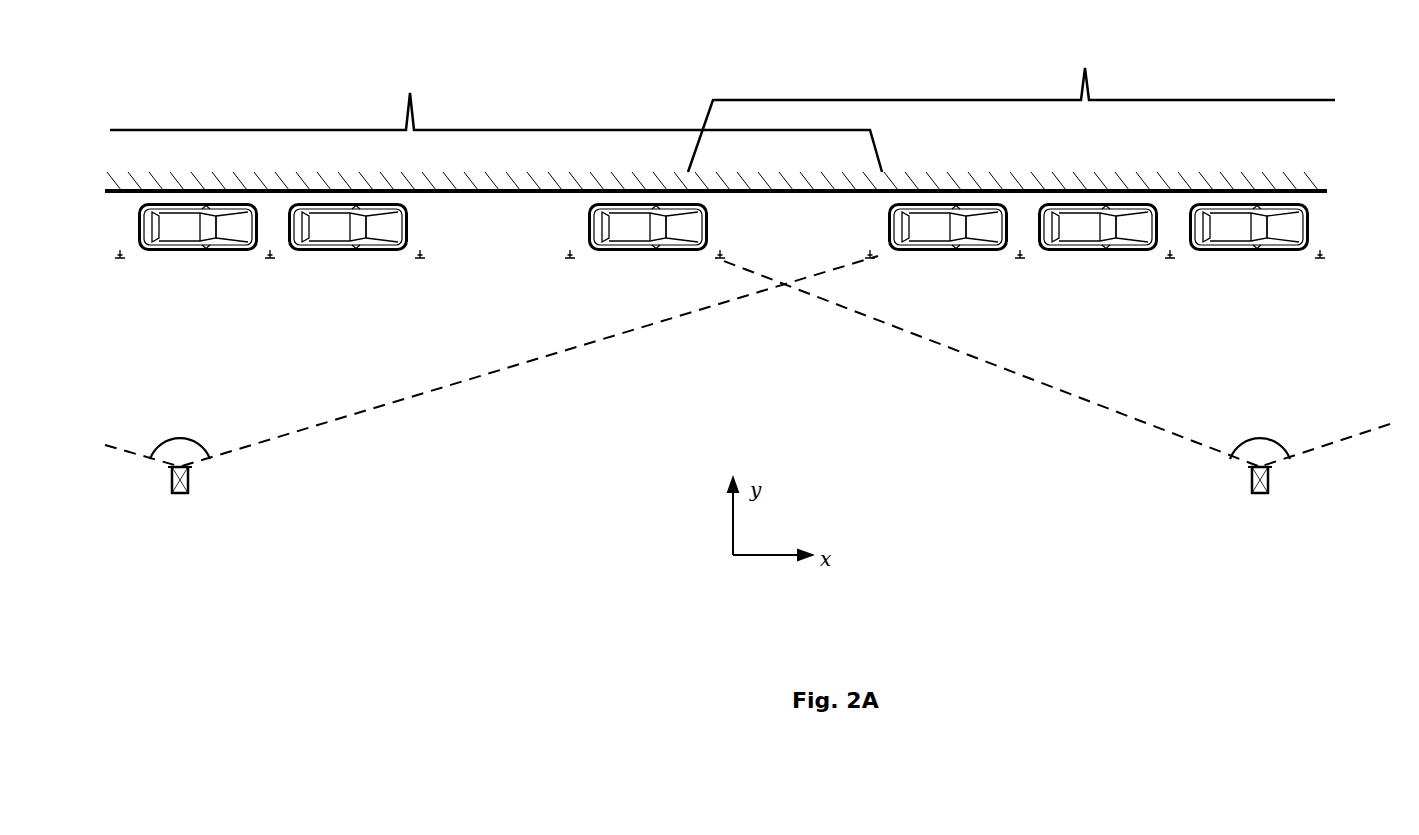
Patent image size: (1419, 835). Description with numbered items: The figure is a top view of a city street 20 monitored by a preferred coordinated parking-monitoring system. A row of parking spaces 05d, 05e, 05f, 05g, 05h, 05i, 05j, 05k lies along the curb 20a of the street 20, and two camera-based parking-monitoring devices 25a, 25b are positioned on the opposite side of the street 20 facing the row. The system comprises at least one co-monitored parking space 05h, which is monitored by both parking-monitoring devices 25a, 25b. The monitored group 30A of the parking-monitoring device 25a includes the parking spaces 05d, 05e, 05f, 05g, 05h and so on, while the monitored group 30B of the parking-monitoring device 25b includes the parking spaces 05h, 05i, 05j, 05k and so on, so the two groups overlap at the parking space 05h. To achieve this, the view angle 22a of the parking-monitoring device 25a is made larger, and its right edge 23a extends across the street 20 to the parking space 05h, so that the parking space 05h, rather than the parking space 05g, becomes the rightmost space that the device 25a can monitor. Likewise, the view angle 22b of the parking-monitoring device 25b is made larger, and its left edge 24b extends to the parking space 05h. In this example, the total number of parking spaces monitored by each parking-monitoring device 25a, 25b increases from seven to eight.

The parking space 05d is at (208, 250).
The parking space 05e is at (358, 250).
The parking space 05f is at (498, 250).
The parking space 05g is at (658, 250).
The co-monitored parking space 05h is at (800, 248).
The parking space 05i is at (958, 250).
The parking space 05j is at (1108, 250).
The parking space 05k is at (1259, 250).
The monitored group 30A is at (496, 121).
The monitored group 30B is at (1011, 107).
The street 20 is at (1070, 508).
The curb 20a is at (1318, 180).
The view angle 22a is at (183, 440).
The view angle 22b is at (1263, 440).
The right edge of view angle 23a is at (483, 380).
The left edge of view angle 24b is at (975, 370).
The parking-monitoring device 25a is at (188, 492).
The parking-monitoring device 25b is at (1268, 492).